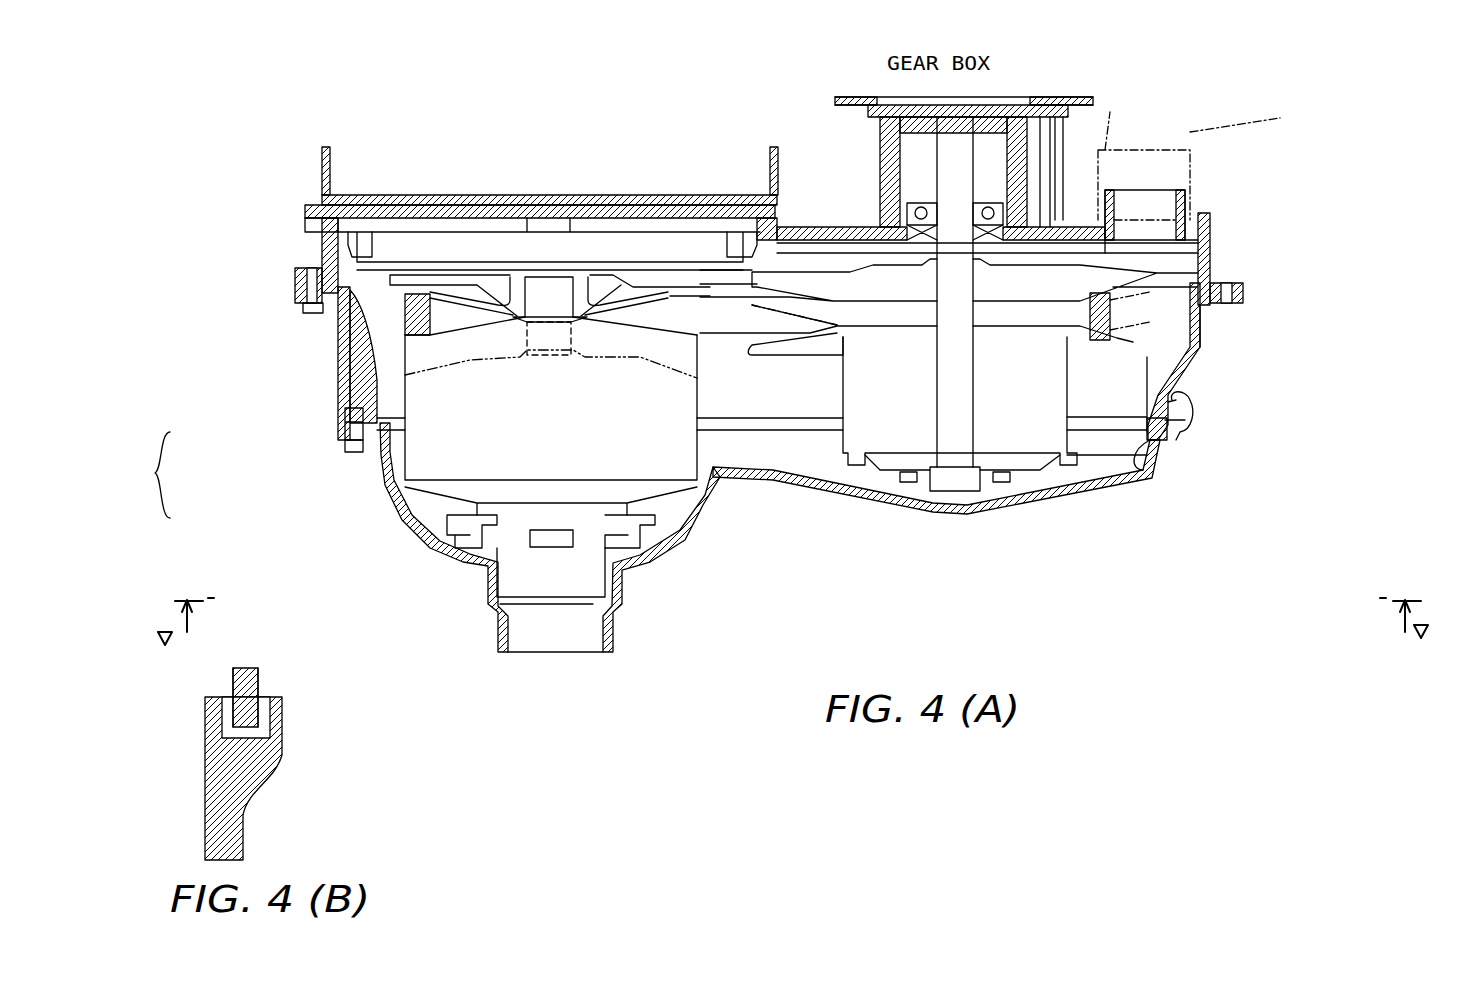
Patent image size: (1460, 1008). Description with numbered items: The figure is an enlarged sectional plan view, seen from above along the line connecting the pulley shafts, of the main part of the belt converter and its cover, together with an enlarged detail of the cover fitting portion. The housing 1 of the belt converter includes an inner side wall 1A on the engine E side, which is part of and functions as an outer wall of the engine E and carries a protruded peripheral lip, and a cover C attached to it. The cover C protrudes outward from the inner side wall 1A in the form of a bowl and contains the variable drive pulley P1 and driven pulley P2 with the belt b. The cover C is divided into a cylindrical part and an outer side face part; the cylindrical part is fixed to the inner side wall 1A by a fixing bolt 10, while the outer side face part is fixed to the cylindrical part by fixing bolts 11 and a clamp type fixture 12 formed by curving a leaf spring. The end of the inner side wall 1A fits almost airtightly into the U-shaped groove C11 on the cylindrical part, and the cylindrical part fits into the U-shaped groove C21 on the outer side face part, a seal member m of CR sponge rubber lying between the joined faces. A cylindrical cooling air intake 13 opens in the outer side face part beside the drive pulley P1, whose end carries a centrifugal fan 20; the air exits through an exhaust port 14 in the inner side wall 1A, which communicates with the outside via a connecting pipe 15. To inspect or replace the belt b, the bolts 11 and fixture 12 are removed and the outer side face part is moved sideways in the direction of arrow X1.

The engine E is at (535, 175).
The exhaust port 14 is at (1137, 195).
The connecting pipe 15 is at (1190, 165).
The inner side wall 1A is at (1212, 248).
The groove C11 is at (1208, 300).
The housing 1 is at (1210, 350).
The clamp type fixture 12 is at (1195, 418).
The groove C21 is at (1140, 430).
The driven pulley P2 is at (1035, 345).
The drive pulley P1 is at (677, 432).
The arrow X1 is at (848, 515).
The centrifugal fan 20 is at (635, 543).
The cooling air intake 13 is at (553, 622).
The fixing bolt 10 is at (313, 318).
The belt b is at (418, 316).
The cover C is at (154, 475).
The fixing bolt 11 is at (353, 455).
The seal member m is at (230, 718).